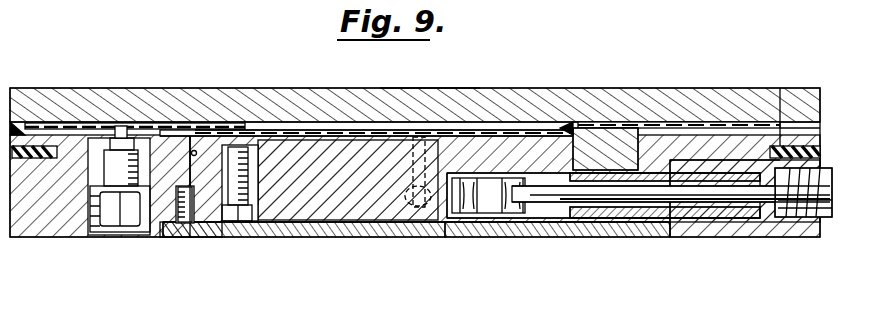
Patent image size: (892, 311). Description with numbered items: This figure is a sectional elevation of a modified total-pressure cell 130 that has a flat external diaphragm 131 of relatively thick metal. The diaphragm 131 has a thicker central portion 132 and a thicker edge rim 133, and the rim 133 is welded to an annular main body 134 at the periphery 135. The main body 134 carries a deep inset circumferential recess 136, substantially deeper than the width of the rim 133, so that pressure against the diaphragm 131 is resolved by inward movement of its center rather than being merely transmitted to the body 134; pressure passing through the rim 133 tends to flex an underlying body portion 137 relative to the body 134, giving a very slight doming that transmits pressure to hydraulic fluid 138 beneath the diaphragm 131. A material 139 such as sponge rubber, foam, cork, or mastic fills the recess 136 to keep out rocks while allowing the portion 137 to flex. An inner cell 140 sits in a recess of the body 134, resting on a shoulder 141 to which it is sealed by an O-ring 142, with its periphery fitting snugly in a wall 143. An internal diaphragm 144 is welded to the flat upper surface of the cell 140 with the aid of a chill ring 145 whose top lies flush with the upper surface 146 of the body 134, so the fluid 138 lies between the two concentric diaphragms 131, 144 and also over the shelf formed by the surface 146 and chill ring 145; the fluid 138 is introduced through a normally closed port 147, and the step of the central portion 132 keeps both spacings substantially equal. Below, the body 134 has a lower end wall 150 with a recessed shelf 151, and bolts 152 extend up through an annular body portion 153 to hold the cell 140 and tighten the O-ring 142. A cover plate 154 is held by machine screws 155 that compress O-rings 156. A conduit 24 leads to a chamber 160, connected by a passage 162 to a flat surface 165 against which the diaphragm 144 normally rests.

The conduit 24 is at (545, 202).
The total-pressure cell 130 is at (432, 88).
The external diaphragm 131 is at (655, 88).
The thicker central portion 132 is at (578, 130).
The thicker edge rim 133 is at (782, 122).
The main body 134 is at (28, 218).
The periphery 135 is at (820, 128).
The circumferential recess 136 is at (770, 152).
The underlying body portion 137 is at (22, 128).
The hydraulic fluid 138 is at (560, 122).
The filler material 139 is at (36, 162).
The inner cell 140 is at (342, 200).
The shoulder 141 is at (254, 175).
The O-ring 142 is at (201, 204).
The wall 143 is at (191, 152).
The internal diaphragm 144 is at (332, 134).
The chill ring 145 is at (222, 137).
The upper surface 146 is at (162, 134).
The port 147 is at (124, 128).
The lower end wall 150 is at (705, 237).
The recessed shelf 151 is at (600, 232).
The bolt 152 is at (238, 228).
The annular body portion 153 is at (256, 192).
The cover plate 154 is at (338, 232).
The machine screw 155 is at (180, 236).
The O-ring 156 is at (205, 238).
The chamber 160 is at (456, 178).
The passage 162 is at (410, 150).
The flat surface 165 is at (468, 135).